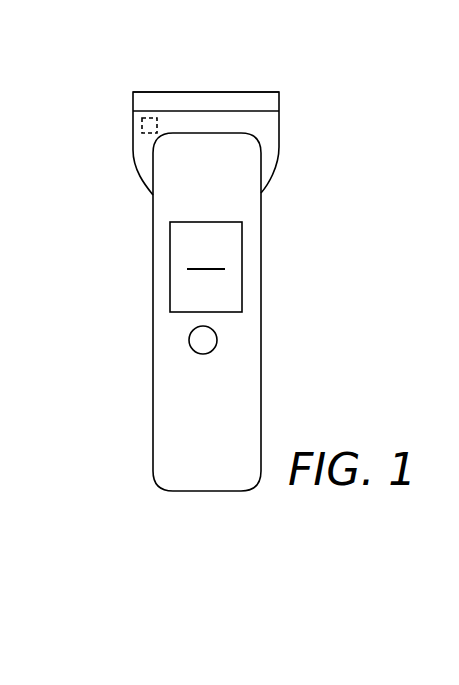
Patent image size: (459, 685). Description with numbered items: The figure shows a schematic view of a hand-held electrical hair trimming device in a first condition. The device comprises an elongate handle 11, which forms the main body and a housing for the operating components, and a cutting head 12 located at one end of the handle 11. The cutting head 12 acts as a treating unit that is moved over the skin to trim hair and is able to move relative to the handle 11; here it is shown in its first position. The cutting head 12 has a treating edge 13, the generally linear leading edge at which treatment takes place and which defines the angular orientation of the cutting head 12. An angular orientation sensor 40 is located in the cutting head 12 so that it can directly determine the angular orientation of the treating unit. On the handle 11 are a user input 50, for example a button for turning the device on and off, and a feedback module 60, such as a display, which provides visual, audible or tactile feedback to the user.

The handle 11 is at (150, 353).
The cutting head 12 is at (272, 126).
The treating edge 13 is at (187, 92).
The angular orientation sensor 40 is at (140, 124).
The user input 50 is at (218, 339).
The feedback module 60 is at (170, 265).